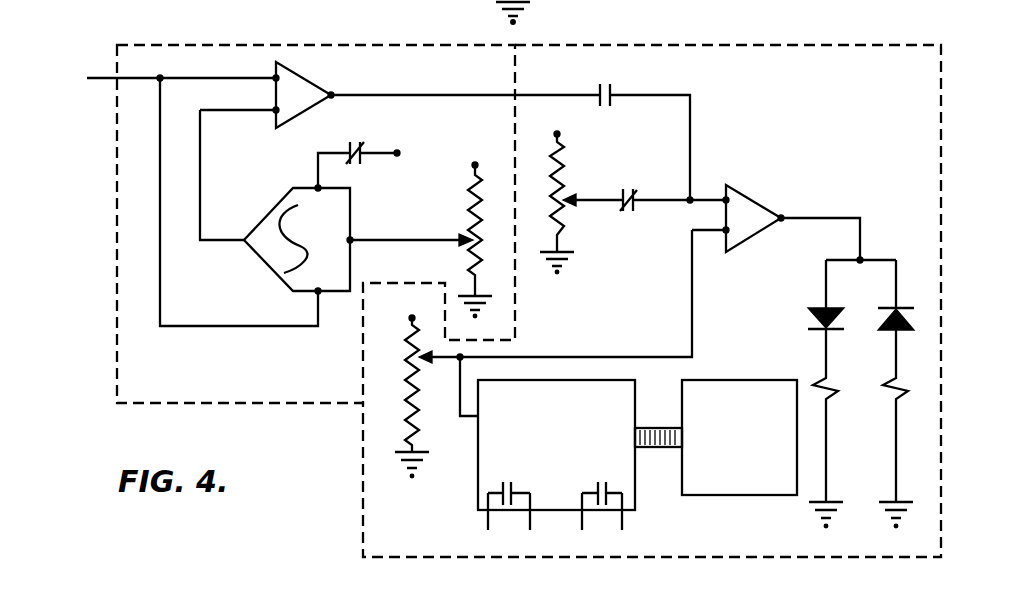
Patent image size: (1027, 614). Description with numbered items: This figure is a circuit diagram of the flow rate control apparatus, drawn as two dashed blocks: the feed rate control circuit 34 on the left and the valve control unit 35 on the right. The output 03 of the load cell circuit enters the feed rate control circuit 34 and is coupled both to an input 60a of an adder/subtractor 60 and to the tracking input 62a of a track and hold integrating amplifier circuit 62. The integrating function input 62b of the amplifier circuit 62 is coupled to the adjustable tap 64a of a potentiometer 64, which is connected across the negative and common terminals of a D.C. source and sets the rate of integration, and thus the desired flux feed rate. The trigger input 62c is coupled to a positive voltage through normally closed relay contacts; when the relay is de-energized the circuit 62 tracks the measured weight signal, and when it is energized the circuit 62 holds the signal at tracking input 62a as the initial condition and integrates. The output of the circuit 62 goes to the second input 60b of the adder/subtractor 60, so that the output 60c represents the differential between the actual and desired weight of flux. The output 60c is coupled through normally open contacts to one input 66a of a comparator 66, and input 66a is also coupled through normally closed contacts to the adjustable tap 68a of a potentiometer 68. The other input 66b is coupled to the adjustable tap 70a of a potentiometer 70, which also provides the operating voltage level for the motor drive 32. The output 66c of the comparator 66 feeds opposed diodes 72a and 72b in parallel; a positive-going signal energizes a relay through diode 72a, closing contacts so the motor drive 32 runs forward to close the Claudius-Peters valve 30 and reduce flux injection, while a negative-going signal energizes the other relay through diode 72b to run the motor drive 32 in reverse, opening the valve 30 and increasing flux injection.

The feed rate control circuit 34 is at (212, 38).
The valve control unit 35 is at (822, 36).
The output of load cell circuit 03 is at (185, 197).
The adder/subtractor 60 is at (302, 77).
The input of adder/subtractor 60a is at (276, 78).
The second input of adder/subtractor 60b is at (275, 112).
The output of adder/subtractor 60c is at (336, 92).
The track and hold integrating amplifier circuit 62 is at (273, 211).
The tracking input 62a is at (317, 292).
The integrating function input 62b is at (354, 236).
The trigger input 62c is at (318, 186).
The potentiometer 64 is at (468, 190).
The adjustable tap of potentiometer 64a is at (462, 247).
The comparator 66 is at (765, 203).
The input of comparator 66a is at (727, 199).
The other input of comparator 66b is at (726, 232).
The output of comparator 66c is at (785, 214).
The potentiometer 68 is at (566, 160).
The adjustable tap of potentiometer 68a is at (573, 204).
The potentiometer 70 is at (410, 390).
The adjustable tap of potentiometer 70a is at (433, 362).
The diode 72a is at (812, 313).
The diode 72b is at (904, 307).
The Claudius-Peters valve 30 is at (738, 380).
The motor drive 32 is at (636, 402).